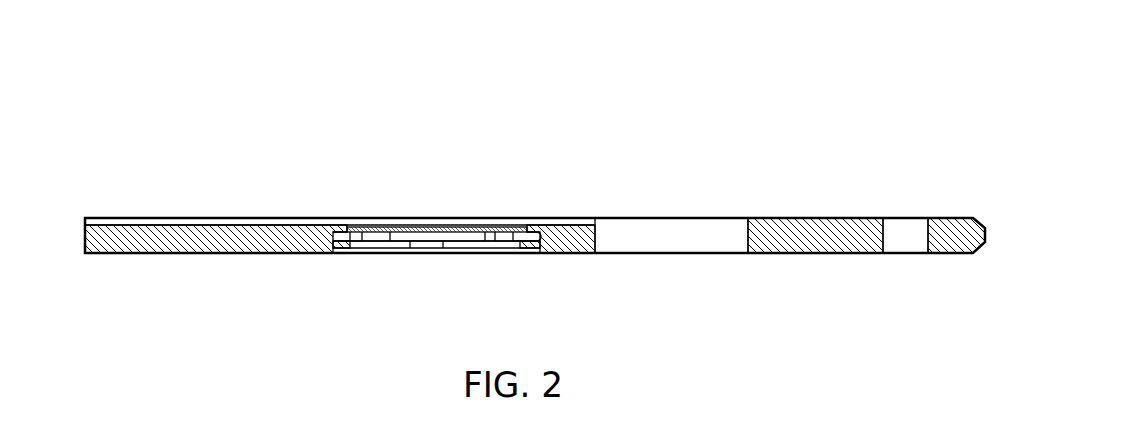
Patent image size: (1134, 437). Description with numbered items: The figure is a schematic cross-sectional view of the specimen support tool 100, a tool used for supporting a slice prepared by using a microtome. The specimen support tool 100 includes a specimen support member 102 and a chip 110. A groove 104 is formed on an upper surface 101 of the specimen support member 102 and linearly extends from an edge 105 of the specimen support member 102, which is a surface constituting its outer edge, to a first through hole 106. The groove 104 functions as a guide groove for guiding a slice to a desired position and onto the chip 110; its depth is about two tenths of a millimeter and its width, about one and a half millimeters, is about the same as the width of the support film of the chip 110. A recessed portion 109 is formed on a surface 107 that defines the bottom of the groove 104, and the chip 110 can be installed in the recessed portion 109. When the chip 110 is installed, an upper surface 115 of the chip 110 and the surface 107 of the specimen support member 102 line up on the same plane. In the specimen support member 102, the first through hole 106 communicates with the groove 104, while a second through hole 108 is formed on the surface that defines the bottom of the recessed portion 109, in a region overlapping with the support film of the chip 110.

The specimen support tool 100 is at (808, 83).
The upper surface 101 is at (789, 218).
The specimen support member 102 is at (762, 218).
The groove 104 is at (252, 223).
The edge 105 is at (85, 232).
The first through hole 106 is at (663, 240).
The surface 107 is at (318, 253).
The second through hole 108 is at (415, 247).
The recessed portion 109 is at (487, 214).
The chip 110 is at (396, 223).
The upper surface of the chip 115 is at (373, 254).